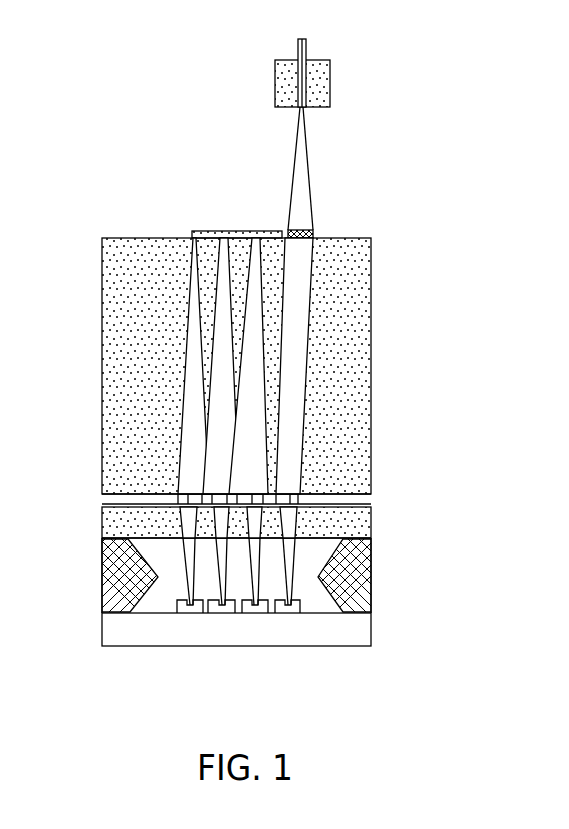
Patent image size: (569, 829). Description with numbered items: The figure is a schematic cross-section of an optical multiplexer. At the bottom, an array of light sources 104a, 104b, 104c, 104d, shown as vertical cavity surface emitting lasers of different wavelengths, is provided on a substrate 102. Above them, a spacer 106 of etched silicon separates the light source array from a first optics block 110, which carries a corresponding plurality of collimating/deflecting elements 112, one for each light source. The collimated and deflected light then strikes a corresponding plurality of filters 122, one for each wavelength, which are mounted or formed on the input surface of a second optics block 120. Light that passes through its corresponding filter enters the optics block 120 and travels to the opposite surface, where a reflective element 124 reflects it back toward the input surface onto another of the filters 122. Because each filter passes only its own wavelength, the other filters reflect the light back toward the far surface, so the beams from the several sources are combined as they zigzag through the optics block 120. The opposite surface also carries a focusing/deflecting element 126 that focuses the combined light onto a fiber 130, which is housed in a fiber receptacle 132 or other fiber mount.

The substrate 102 is at (342, 646).
The light source 104a is at (180, 617).
The light source 104b is at (223, 617).
The light source 104c is at (263, 617).
The light source 104d is at (300, 615).
The spacer 106 is at (372, 590).
The first optics block 110 is at (103, 512).
The collimating/deflecting elements 112 is at (308, 515).
The second optics block 120 is at (358, 405).
The filters 122 is at (380, 496).
The reflective element 124 is at (219, 230).
The focusing/deflecting element 126 is at (320, 219).
The fiber 130 is at (307, 52).
The fiber receptacle 132 is at (330, 87).